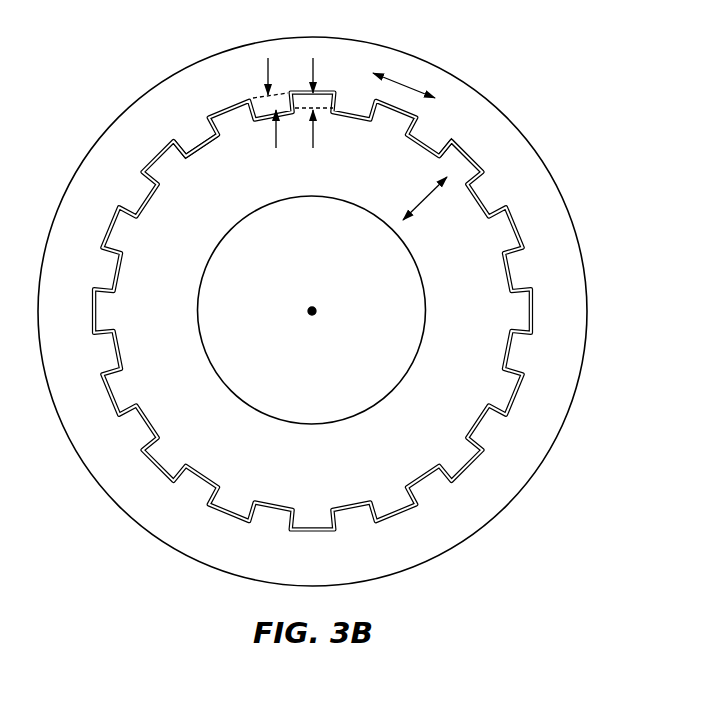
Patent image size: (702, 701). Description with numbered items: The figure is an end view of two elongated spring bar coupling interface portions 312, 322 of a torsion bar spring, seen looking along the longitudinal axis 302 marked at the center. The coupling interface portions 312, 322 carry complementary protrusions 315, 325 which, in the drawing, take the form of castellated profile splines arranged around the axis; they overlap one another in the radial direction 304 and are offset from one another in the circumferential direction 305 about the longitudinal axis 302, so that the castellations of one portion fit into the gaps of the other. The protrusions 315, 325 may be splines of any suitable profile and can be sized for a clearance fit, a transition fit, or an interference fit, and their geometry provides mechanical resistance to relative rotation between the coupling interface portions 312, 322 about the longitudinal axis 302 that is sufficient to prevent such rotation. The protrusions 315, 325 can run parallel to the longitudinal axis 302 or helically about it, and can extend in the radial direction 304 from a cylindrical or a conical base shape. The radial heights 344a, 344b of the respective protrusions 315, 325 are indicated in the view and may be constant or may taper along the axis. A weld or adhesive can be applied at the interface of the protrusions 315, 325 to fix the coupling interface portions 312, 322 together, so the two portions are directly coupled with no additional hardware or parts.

The longitudinal axis 302 is at (316, 310).
The radial direction 304 is at (430, 198).
The circumferential direction 305 is at (404, 78).
The coupling interface portion 312 is at (186, 124).
The protrusion 315 is at (428, 133).
The coupling interface portion 322 is at (157, 154).
The protrusion 325 is at (460, 160).
The radial height 344a is at (276, 132).
The radial height 344b is at (313, 130).